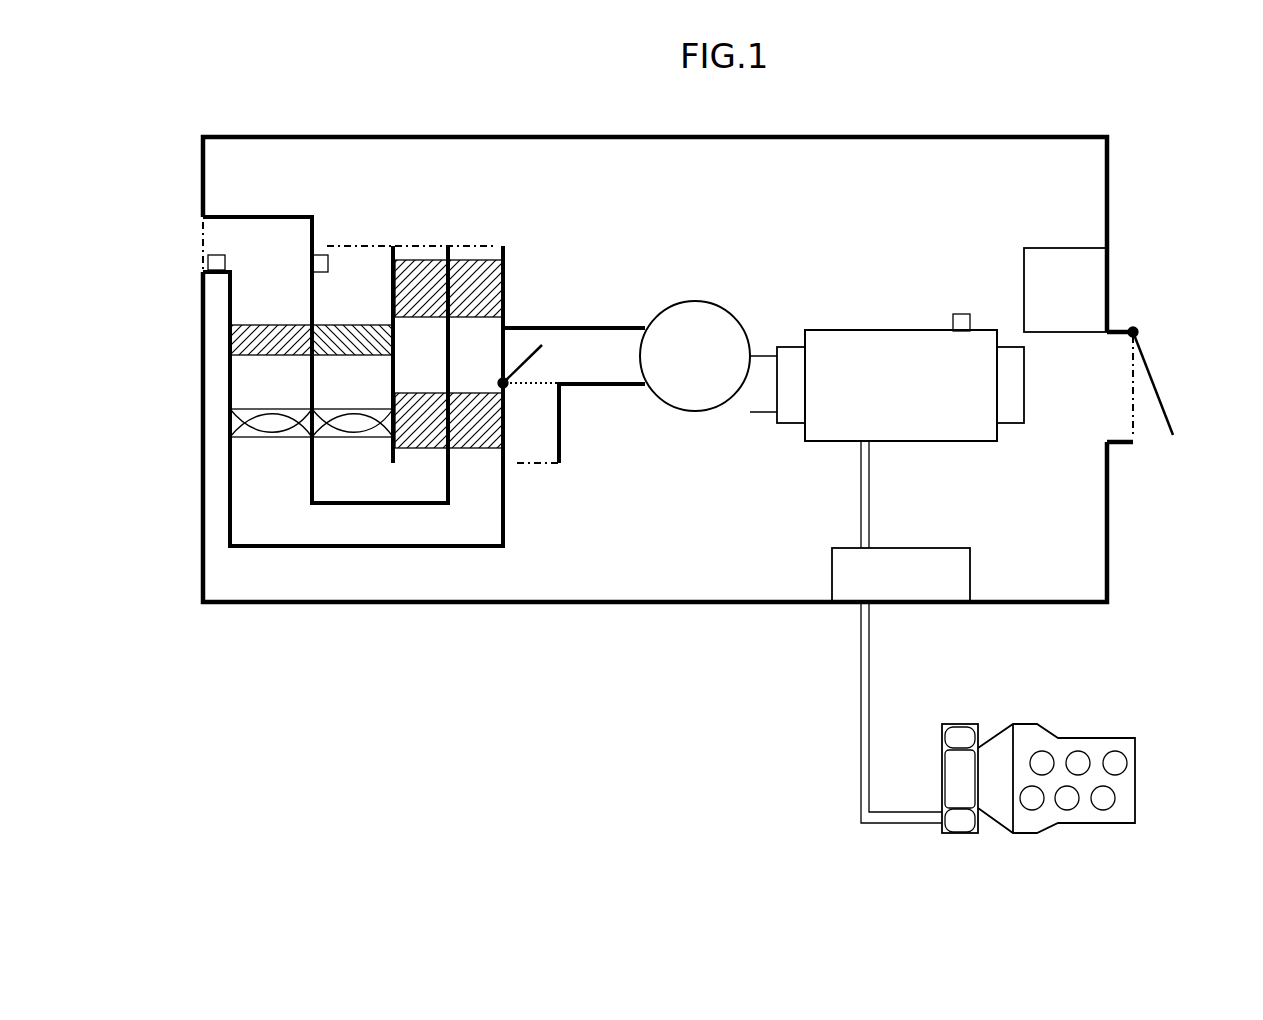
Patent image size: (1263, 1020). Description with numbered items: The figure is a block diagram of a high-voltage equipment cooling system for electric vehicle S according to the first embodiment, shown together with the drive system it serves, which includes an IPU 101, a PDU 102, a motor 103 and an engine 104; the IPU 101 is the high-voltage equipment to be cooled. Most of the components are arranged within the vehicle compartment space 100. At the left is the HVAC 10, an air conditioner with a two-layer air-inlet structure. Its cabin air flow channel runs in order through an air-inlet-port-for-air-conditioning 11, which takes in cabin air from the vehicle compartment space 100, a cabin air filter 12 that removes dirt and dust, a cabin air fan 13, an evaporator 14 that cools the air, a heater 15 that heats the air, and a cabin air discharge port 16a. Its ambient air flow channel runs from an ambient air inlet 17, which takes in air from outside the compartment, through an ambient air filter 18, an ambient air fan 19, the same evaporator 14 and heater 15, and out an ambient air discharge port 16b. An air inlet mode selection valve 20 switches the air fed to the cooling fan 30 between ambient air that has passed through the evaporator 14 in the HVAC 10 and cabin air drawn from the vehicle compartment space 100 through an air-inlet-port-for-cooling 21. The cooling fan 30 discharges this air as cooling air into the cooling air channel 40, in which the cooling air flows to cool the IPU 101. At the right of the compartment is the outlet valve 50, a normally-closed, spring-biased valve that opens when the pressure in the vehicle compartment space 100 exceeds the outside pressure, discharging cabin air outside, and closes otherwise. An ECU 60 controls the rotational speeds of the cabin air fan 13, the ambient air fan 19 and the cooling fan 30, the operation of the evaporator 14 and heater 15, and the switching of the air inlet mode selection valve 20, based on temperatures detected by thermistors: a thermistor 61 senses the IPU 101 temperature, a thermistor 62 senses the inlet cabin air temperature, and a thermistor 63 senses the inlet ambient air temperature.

The vehicle compartment space 100 is at (665, 137).
The high-voltage equipment cooling system for electric vehicle S is at (1139, 182).
The HVAC 10 is at (450, 548).
The air-inlet-port-for-air-conditioning 11 is at (340, 246).
The cabin air filter 12 is at (328, 325).
The cabin air fan 13 is at (328, 408).
The evaporator 14 is at (477, 450).
The heater 15 is at (505, 260).
The cabin air discharge port 16a is at (400, 246).
The ambient air discharge port 16b is at (470, 246).
The ambient air inlet 17 is at (203, 257).
The ambient air filter 18 is at (240, 325).
The ambient air fan 19 is at (240, 408).
The air inlet mode selection valve 20 is at (529, 355).
The air-inlet-port-for-cooling 21 is at (535, 464).
The cooling fan 30 is at (693, 302).
The cooling air channel 40 is at (793, 347).
The outlet valve 50 is at (1152, 378).
The ECU 60 is at (1050, 248).
The thermistor 61 is at (960, 313).
The thermistor 62 is at (320, 254).
The thermistor 63 is at (216, 254).
The IPU 101 is at (885, 330).
The PDU 102 is at (927, 548).
The motor 103 is at (953, 724).
The engine 104 is at (1073, 738).